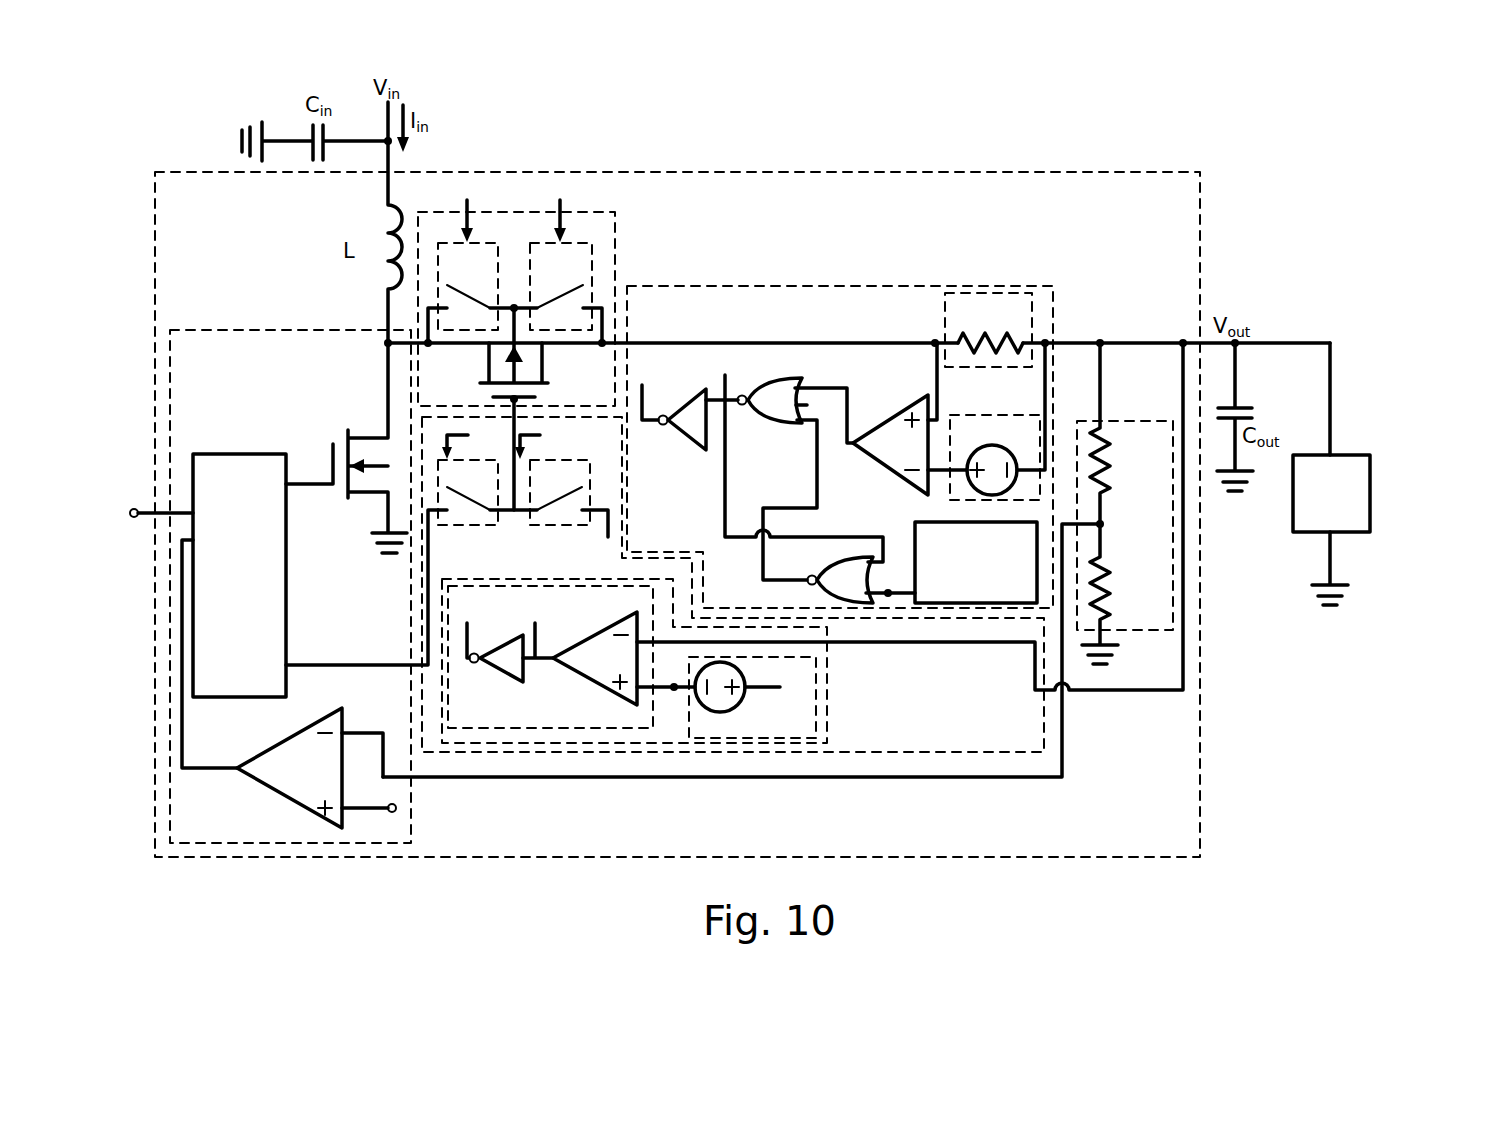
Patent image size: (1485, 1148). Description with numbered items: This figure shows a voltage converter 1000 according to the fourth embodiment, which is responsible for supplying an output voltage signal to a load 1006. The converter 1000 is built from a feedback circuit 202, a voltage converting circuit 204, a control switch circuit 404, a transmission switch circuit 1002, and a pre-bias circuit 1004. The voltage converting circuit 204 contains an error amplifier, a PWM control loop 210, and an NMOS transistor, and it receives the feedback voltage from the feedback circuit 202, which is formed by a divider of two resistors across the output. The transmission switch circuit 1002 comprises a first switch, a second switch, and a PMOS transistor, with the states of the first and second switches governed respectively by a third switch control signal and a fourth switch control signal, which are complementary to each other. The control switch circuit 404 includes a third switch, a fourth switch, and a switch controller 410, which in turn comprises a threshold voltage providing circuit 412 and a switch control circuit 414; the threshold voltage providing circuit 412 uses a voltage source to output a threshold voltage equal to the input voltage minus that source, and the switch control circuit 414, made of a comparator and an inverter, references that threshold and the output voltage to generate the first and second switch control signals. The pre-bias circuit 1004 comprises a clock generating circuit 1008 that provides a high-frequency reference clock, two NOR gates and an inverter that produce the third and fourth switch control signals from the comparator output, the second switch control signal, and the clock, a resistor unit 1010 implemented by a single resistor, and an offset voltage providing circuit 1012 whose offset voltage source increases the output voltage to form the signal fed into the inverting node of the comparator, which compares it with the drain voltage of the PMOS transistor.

The voltage converter 1000 is at (1252, 148).
The transmission switch circuit 1002 is at (618, 233).
The pre-bias circuit 1004 is at (840, 432).
The load 1006 is at (1373, 493).
The clock generating circuit 1008 is at (973, 610).
The resistor unit 1010 is at (966, 369).
The offset voltage providing circuit 1012 is at (1020, 414).
The feedback circuit 202 is at (1175, 572).
The voltage converting circuit 204 is at (299, 586).
The PWM control loop 210 is at (249, 454).
The control switch circuit 404 is at (665, 619).
The switch controller 410 is at (634, 699).
The threshold voltage providing circuit 412 is at (723, 740).
The switch control circuit 414 is at (549, 730).